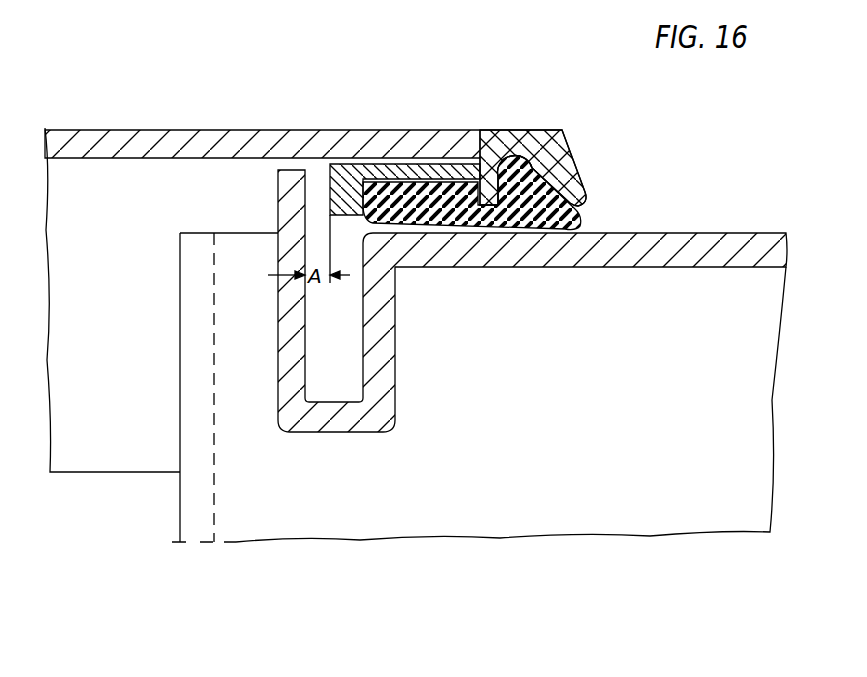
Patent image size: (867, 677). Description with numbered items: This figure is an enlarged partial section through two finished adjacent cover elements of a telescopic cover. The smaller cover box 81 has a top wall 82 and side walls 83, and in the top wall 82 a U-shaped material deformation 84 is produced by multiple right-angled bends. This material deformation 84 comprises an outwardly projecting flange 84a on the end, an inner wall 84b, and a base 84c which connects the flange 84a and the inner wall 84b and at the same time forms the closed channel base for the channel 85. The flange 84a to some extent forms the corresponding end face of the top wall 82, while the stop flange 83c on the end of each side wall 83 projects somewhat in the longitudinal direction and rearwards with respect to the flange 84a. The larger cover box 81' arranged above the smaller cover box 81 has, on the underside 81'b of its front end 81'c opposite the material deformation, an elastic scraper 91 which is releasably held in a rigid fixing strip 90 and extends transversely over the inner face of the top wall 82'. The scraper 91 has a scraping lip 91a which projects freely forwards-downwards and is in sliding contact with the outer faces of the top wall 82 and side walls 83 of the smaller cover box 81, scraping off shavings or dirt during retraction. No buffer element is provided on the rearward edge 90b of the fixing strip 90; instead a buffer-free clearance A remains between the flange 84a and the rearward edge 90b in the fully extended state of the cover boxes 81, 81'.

The cover box 81' is at (315, 138).
The top wall 82' is at (262, 124).
The underside 81'b is at (405, 124).
The front end 81'c is at (527, 148).
The rigid fixing strip 90 is at (365, 165).
The rearward edge 90b is at (330, 190).
The elastic scraper 91 is at (522, 174).
The scraping lip 91a is at (578, 223).
The cover box 81 is at (590, 206).
The top wall 82 is at (590, 275).
The side wall 83 is at (78, 360).
The stop flange 83c is at (197, 492).
The U-shaped material deformation 84 is at (398, 395).
The flange 84a is at (282, 321).
The inner wall 84b is at (386, 360).
The base 84c is at (339, 420).
The channel 85 is at (310, 356).